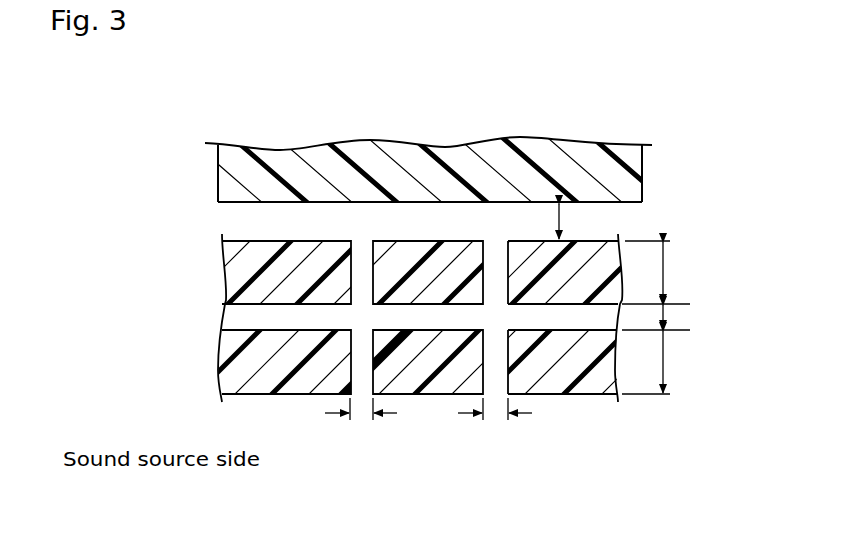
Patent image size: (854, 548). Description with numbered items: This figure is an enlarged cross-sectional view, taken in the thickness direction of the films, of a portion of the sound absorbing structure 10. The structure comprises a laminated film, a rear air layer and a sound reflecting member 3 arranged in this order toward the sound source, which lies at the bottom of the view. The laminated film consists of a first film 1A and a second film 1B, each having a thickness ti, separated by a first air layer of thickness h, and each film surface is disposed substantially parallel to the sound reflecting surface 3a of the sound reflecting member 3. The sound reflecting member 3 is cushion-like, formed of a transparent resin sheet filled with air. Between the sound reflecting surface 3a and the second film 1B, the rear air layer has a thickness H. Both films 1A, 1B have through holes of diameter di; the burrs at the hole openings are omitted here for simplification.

The sound absorbing structure 10 is at (645, 118).
The sound reflecting member 3 is at (228, 176).
The sound reflecting surface 3a is at (620, 204).
The second film 1B is at (214, 274).
The first film 1A is at (214, 357).